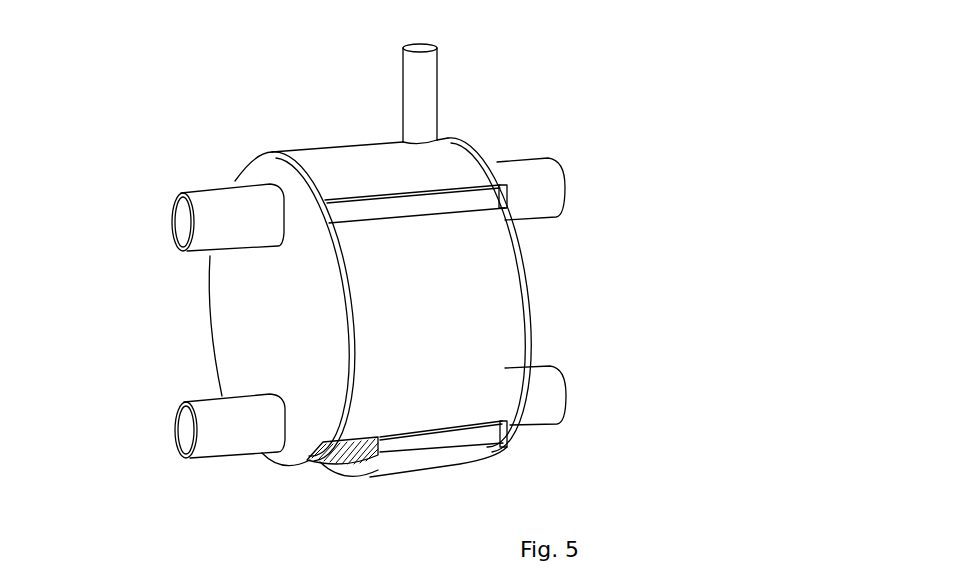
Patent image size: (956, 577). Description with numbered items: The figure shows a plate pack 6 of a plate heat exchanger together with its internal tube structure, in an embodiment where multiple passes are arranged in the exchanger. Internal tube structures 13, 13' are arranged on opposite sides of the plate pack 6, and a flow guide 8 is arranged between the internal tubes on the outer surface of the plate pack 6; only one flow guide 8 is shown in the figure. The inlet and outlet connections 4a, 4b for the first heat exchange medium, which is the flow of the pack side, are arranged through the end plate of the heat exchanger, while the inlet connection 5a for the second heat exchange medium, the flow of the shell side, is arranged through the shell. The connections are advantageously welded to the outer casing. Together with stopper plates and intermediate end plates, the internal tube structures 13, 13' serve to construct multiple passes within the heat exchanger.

The inlet connection 4a is at (215, 417).
The outlet connection 4b is at (215, 205).
The inlet connection 5a is at (418, 93).
The plate pack 6 is at (88, 240).
The flow guide 8 is at (502, 323).
The internal tube structure 13 is at (414, 151).
The internal tube structure 13' is at (415, 458).